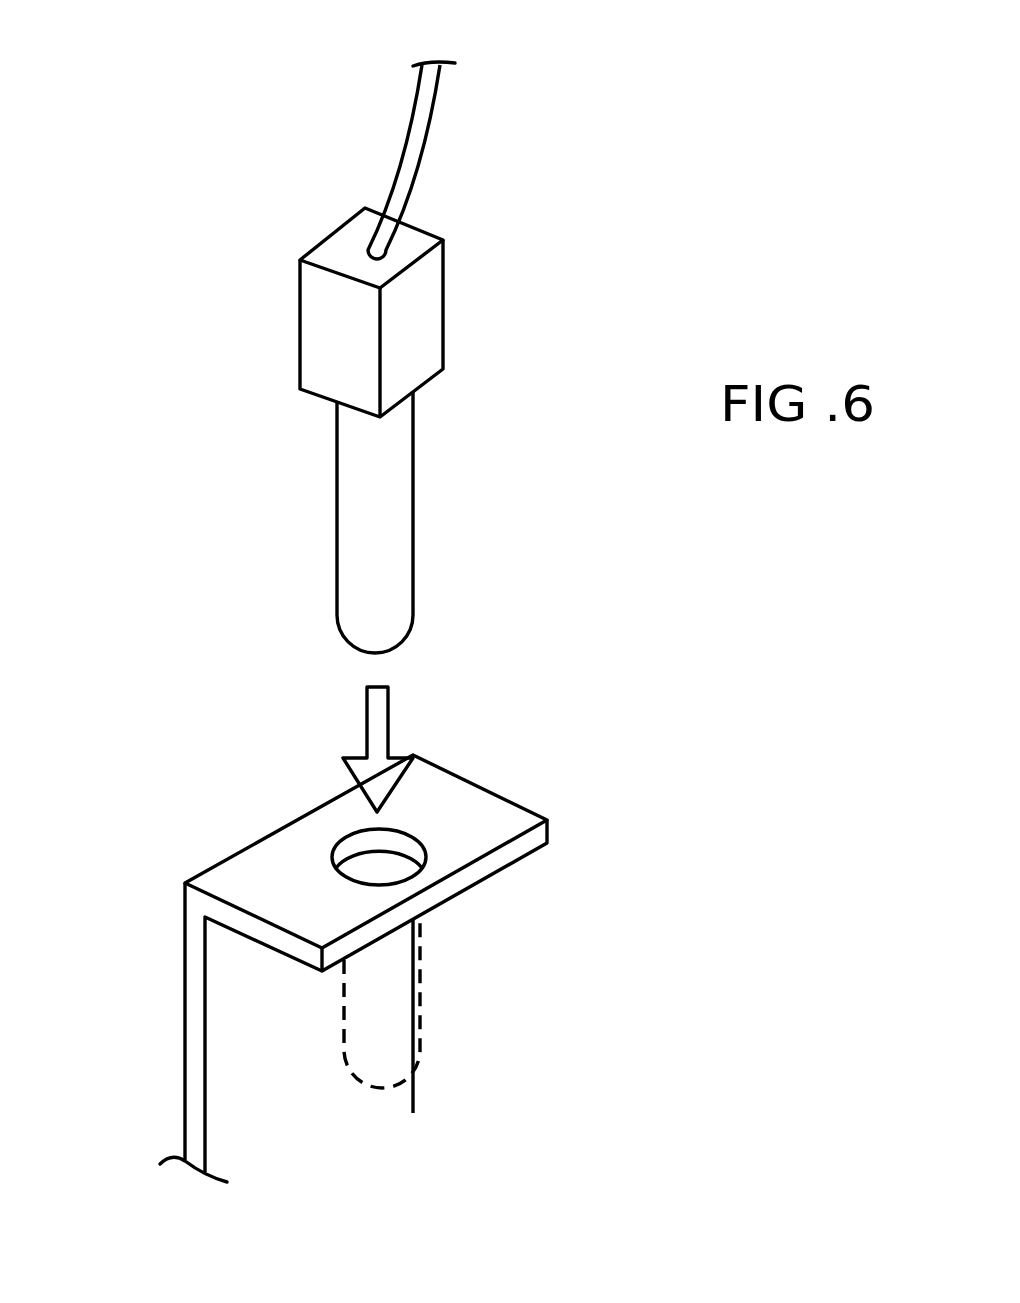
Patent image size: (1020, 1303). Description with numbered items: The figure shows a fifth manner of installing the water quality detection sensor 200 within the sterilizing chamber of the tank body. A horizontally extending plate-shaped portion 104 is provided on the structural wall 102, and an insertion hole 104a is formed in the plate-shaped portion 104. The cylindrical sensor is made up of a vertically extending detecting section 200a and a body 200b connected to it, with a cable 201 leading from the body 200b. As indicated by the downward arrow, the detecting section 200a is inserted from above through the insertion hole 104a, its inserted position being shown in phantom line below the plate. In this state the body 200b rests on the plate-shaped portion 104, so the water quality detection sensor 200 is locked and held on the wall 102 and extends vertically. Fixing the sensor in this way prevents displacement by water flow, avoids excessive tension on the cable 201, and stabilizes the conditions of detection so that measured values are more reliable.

The structural wall 102 is at (182, 992).
The plate-shaped portion 104 is at (490, 810).
The insertion hole 104a is at (392, 878).
The water quality detection sensor 200 is at (137, 367).
The detecting section 200a is at (348, 543).
The body 200b is at (322, 365).
The cable 201 is at (398, 158).